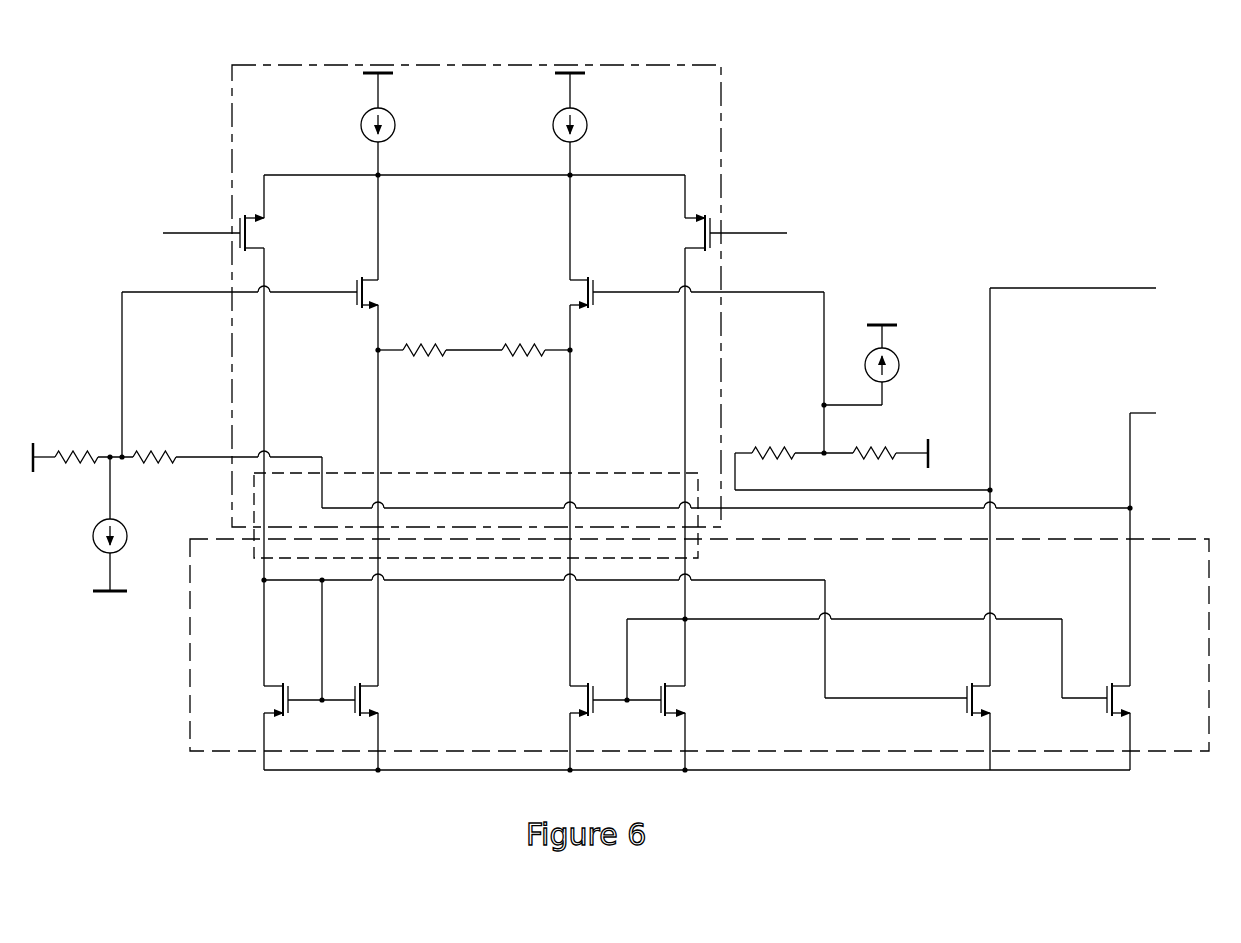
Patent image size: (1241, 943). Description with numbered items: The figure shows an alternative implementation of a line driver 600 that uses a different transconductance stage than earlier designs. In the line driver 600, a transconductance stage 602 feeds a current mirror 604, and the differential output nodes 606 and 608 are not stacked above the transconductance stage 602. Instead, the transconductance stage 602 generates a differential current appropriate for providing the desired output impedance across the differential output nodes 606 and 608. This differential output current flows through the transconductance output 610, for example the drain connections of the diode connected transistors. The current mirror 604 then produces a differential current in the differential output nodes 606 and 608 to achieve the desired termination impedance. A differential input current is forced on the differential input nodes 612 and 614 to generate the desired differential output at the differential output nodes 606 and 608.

The line driver 600 is at (170, 60).
The transconductance stage 602 is at (278, 105).
The current mirror 604 is at (230, 740).
The differential output node txp 606 is at (1143, 287).
The differential output node txm 608 is at (1140, 412).
The transconductance output 610 is at (520, 500).
The differential input node ip 612 is at (110, 506).
The differential input node im 614 is at (792, 292).